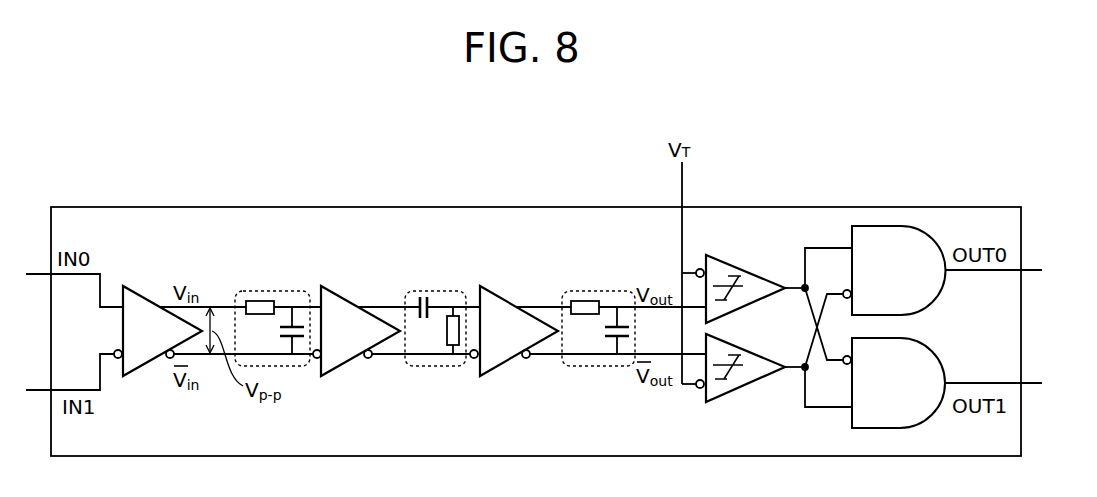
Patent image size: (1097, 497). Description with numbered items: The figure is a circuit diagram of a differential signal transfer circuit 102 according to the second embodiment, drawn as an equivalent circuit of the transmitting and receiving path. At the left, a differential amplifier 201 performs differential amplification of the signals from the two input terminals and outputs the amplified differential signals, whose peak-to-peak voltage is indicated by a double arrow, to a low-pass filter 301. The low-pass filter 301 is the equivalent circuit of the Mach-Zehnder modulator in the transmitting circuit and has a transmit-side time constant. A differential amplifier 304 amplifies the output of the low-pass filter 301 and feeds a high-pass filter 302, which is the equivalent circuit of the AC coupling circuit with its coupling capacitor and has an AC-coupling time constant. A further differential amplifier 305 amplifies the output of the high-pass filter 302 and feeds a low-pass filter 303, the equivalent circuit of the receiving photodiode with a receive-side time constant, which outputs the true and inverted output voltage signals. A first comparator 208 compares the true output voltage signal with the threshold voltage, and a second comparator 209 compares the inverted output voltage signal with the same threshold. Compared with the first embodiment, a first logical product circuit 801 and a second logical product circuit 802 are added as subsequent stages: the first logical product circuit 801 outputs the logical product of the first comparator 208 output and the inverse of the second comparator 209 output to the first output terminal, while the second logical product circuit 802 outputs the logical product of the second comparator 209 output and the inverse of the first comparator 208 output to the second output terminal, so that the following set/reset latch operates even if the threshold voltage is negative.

The differential signal transfer circuit 102 is at (325, 207).
The differential amplifier 201 is at (145, 364).
The low-pass filter 301 is at (278, 291).
The differential amplifier 304 is at (345, 297).
The high-pass filter 302 is at (437, 291).
The differential amplifier 305 is at (502, 298).
The low-pass filter 303 is at (600, 291).
The first comparator 208 is at (735, 267).
The second comparator 209 is at (748, 383).
The first logical product circuit 801 is at (892, 226).
The second logical product circuit 802 is at (883, 428).